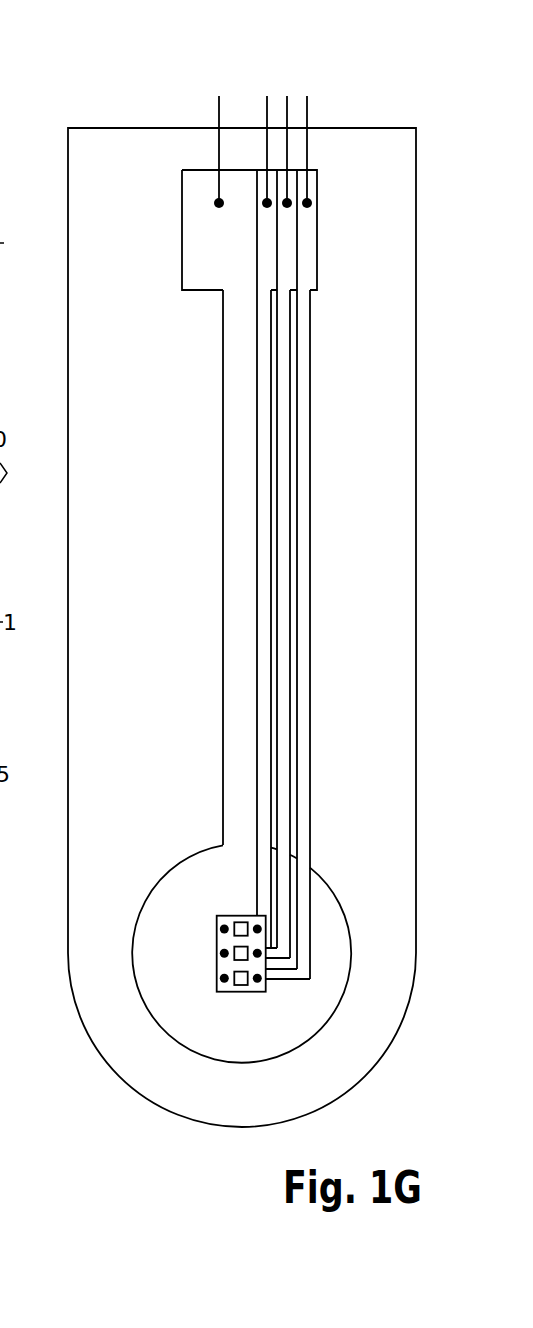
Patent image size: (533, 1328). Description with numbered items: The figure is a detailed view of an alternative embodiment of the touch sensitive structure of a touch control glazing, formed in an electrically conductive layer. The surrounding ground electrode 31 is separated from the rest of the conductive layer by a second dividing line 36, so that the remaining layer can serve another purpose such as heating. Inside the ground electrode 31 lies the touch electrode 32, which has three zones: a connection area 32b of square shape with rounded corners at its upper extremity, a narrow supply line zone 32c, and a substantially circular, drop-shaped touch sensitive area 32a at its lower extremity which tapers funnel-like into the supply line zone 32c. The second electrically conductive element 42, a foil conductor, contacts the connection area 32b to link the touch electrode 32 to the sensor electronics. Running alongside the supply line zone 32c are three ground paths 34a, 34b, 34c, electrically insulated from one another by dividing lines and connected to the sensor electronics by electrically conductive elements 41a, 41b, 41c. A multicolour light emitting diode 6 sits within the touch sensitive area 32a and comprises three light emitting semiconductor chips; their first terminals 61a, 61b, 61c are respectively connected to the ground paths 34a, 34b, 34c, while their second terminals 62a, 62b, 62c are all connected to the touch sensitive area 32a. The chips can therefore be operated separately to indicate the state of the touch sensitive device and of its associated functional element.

The light emitting diode 6 is at (240, 1004).
The ground electrode 31 is at (384, 293).
The touch electrode 32 is at (178, 616).
The touch sensitive area 32a is at (207, 884).
The connection area 32b is at (208, 239).
The supply line zone 32c is at (240, 420).
The ground path 34a is at (303, 733).
The ground path 34b is at (282, 668).
The ground path 34c is at (262, 637).
The second dividing line 36 is at (16, 243).
The electrically conductive element 41a is at (307, 111).
The electrically conductive element 41b is at (287, 103).
The electrically conductive element 41c is at (267, 108).
The second electrically conductive element 42 is at (219, 109).
The first terminal 61a is at (257, 992).
The first terminal 61b is at (257, 953).
The first terminal 61c is at (257, 929).
The second terminal 62a is at (228, 992).
The second terminal 62b is at (224, 953).
The second terminal 62c is at (224, 929).